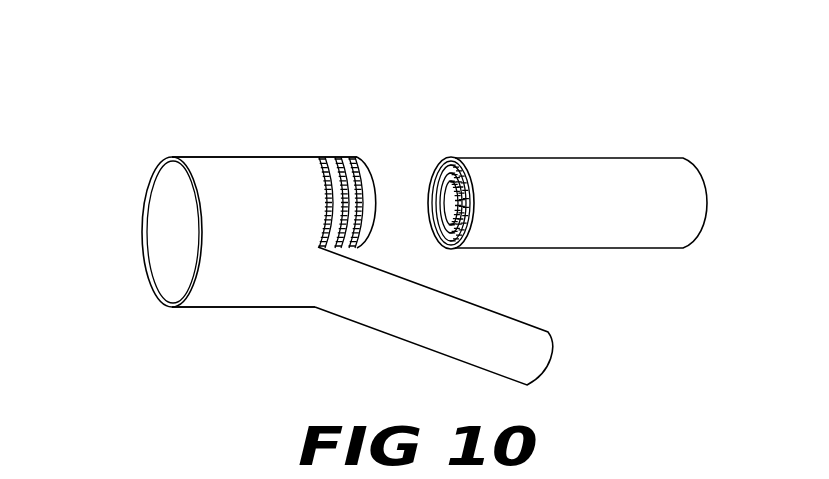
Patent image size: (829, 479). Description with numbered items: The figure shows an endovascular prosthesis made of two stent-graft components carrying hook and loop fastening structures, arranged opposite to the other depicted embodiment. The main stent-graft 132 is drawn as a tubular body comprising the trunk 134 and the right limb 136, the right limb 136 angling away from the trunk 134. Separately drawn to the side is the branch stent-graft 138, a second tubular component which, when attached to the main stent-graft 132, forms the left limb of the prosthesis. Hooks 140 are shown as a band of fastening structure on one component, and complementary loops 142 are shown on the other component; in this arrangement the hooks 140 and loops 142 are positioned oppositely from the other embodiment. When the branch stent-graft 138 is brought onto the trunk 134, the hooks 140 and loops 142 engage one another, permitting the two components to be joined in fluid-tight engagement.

The main stent-graft 132 is at (157, 93).
The trunk 134 is at (256, 156).
The right limb 136 is at (415, 345).
The branch stent-graft 138 is at (612, 157).
The hooks 140 is at (362, 157).
The loops 142 is at (460, 215).